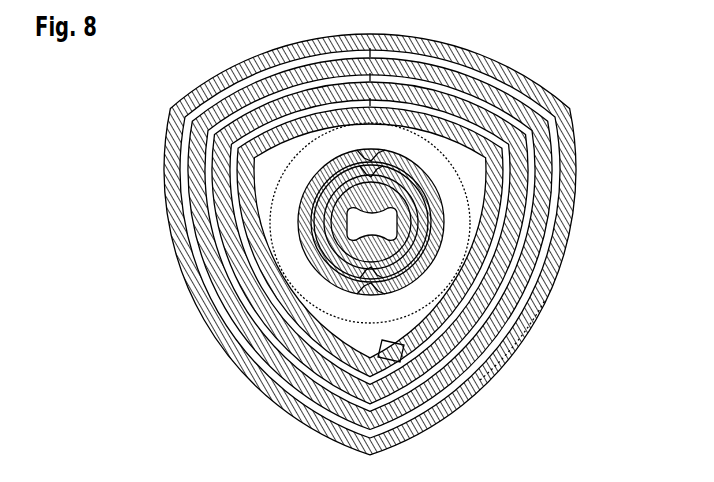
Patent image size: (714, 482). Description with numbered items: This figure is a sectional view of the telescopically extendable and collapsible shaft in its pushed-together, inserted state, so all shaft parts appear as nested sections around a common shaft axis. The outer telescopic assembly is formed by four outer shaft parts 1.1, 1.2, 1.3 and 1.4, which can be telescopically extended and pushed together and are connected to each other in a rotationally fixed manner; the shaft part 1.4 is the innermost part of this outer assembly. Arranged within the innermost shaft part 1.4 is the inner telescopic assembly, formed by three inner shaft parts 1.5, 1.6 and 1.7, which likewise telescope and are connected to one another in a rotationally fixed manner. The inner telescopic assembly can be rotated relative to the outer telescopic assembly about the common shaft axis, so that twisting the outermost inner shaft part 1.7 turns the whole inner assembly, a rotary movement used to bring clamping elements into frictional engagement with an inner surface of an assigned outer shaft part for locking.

The outer shaft part 1.1 is at (165, 192).
The outer shaft part 1.2 is at (195, 248).
The outer shaft part 1.3 is at (207, 317).
The innermost shaft part of the outer telescopic assembly 1.4 is at (240, 368).
The inner shaft part 1.5 is at (520, 315).
The inner shaft part 1.6 is at (445, 243).
The outermost shaft part of the inner telescopic assembly 1.7 is at (445, 213).